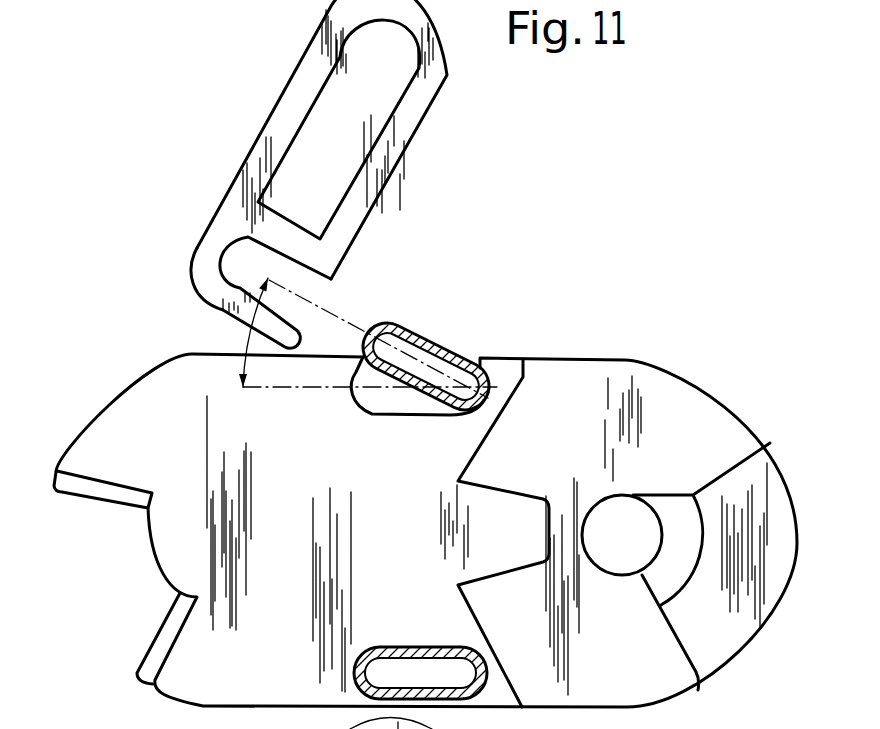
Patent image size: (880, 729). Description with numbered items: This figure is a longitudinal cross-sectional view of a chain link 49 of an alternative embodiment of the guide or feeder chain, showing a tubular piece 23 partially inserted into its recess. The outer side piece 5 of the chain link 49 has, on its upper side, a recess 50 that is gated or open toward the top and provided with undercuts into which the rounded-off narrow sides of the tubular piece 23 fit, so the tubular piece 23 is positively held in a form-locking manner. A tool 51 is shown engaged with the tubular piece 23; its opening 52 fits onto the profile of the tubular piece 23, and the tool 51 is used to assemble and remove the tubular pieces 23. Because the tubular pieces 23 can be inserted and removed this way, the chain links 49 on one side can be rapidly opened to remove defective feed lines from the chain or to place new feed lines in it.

The outer side piece 5 is at (288, 548).
The tubular piece 23 is at (425, 347).
The chain link 49 is at (136, 602).
The recess 50 is at (375, 400).
The tool 51 is at (295, 110).
The opening 52 is at (238, 260).